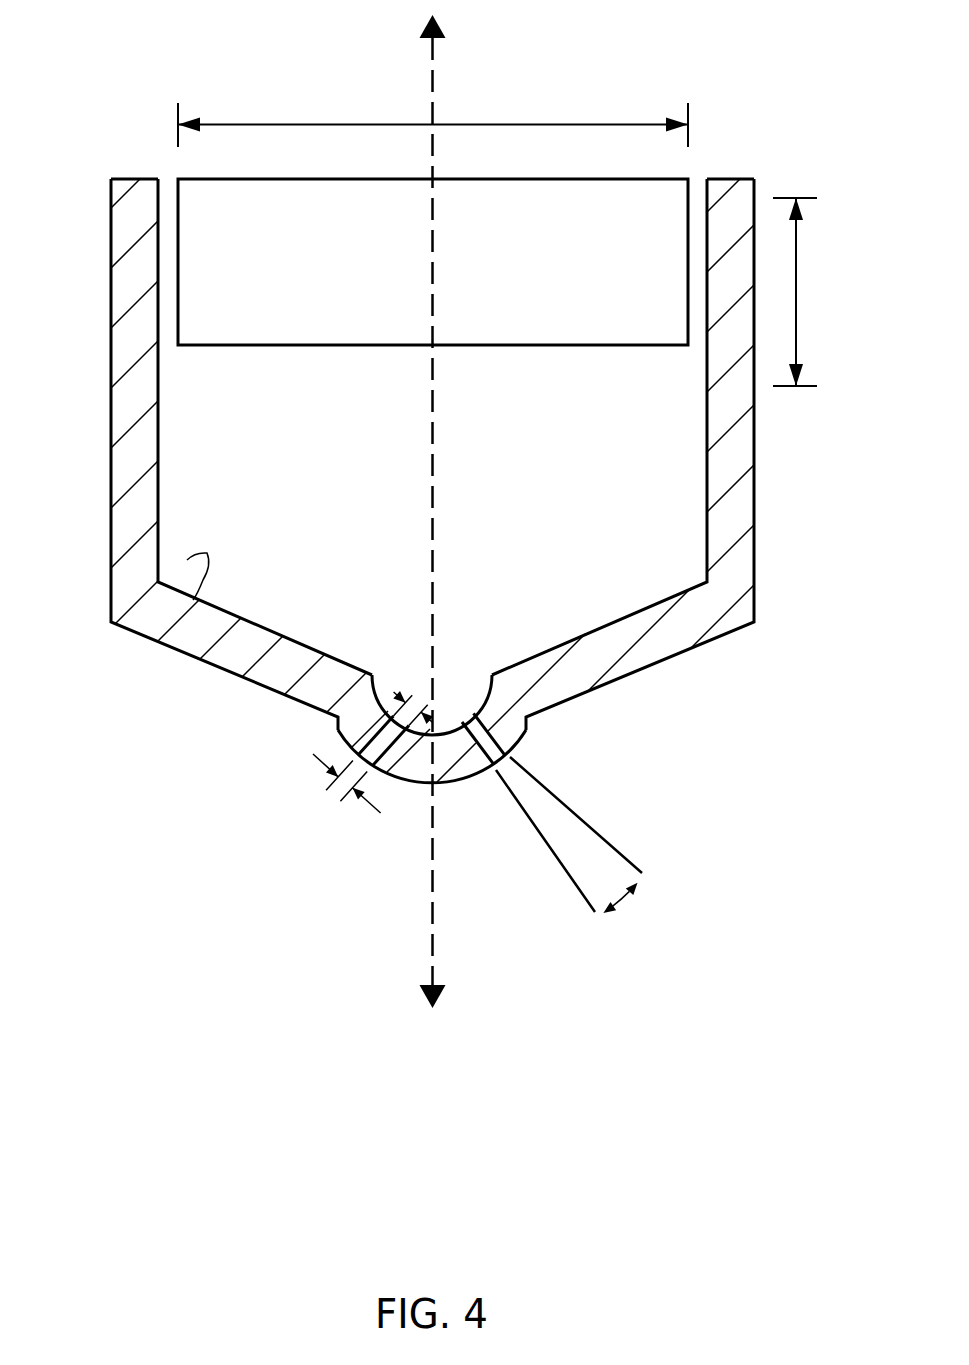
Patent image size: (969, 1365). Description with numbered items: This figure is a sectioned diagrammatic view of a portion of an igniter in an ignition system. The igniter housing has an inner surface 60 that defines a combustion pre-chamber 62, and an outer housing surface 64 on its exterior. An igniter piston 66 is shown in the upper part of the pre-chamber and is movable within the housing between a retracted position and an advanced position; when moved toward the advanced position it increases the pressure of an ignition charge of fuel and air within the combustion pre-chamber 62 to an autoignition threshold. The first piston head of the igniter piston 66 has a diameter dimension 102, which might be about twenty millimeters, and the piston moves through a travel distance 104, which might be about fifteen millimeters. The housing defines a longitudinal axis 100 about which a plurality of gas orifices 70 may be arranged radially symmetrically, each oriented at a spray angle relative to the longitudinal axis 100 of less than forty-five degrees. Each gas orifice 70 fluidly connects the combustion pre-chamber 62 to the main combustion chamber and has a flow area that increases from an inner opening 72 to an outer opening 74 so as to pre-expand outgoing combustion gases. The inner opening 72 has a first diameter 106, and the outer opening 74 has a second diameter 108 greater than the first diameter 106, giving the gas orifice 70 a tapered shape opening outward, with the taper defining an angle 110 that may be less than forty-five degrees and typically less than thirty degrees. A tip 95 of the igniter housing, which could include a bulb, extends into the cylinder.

The inner surface 60 is at (175, 430).
The combustion pre-chamber 62 is at (195, 598).
The outer housing surface 64 is at (94, 494).
The igniter piston 66 is at (647, 212).
The gas orifice 70 is at (378, 745).
The inner opening 72 is at (457, 722).
The outer opening 74 is at (500, 772).
The tip 95 is at (420, 785).
The longitudinal axis 100 is at (433, 440).
The diameter dimension 102 is at (558, 123).
The travel distance 104 is at (797, 276).
The first diameter 106 is at (420, 694).
The second diameter 108 is at (331, 790).
The angle 110 is at (627, 903).